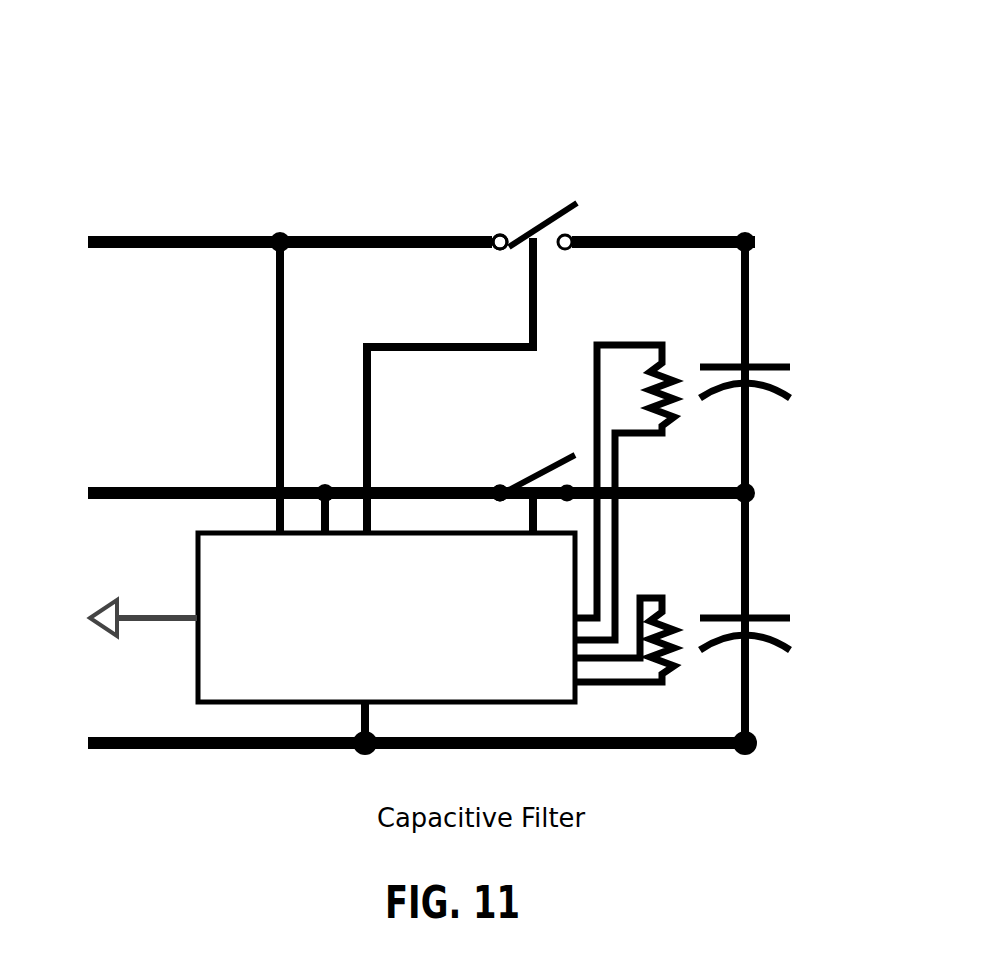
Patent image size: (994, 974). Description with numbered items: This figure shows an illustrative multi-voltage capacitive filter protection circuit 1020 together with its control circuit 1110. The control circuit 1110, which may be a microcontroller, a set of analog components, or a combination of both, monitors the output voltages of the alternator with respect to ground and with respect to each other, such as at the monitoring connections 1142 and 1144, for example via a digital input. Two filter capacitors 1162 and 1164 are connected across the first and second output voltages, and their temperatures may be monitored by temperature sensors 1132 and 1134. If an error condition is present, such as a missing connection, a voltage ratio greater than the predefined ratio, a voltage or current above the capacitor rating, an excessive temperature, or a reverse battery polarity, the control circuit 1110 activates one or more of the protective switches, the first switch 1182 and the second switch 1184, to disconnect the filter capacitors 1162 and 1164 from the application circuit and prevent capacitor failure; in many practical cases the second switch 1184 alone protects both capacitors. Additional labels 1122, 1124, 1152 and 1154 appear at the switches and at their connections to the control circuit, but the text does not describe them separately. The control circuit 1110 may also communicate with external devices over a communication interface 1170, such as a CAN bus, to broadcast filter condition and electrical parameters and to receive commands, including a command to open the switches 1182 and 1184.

The protection circuit 1020 is at (660, 107).
The control circuit 1110 is at (386, 638).
The first switch S1 1122 is at (537, 220).
The second switch S2 1124 is at (538, 475).
The temperature sensor 1132 is at (642, 332).
The temperature sensor 1134 is at (668, 670).
The voltage monitoring connection 1142 is at (283, 333).
The voltage monitoring connection 1144 is at (322, 482).
The switch S1 control line 1152 is at (437, 340).
The switch S2 control line 1154 is at (530, 512).
The filter capacitor 1162 is at (773, 360).
The filter capacitor 1164 is at (770, 612).
The communication interface 1170 is at (152, 617).
The S1 switch 1182 is at (518, 248).
The S2 switch 1184 is at (490, 478).